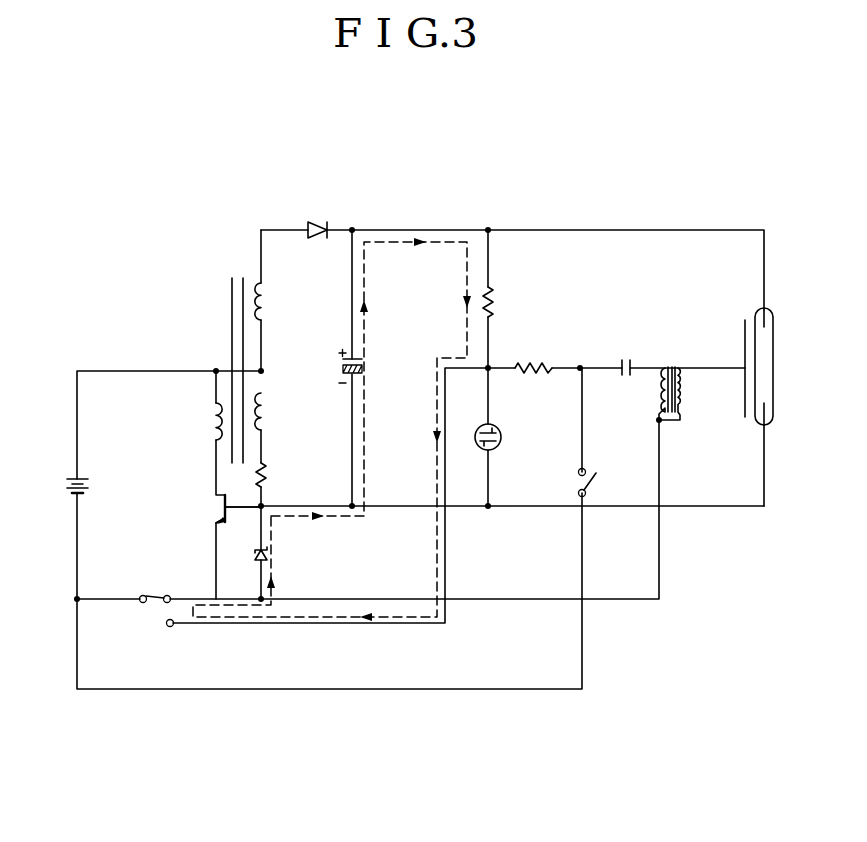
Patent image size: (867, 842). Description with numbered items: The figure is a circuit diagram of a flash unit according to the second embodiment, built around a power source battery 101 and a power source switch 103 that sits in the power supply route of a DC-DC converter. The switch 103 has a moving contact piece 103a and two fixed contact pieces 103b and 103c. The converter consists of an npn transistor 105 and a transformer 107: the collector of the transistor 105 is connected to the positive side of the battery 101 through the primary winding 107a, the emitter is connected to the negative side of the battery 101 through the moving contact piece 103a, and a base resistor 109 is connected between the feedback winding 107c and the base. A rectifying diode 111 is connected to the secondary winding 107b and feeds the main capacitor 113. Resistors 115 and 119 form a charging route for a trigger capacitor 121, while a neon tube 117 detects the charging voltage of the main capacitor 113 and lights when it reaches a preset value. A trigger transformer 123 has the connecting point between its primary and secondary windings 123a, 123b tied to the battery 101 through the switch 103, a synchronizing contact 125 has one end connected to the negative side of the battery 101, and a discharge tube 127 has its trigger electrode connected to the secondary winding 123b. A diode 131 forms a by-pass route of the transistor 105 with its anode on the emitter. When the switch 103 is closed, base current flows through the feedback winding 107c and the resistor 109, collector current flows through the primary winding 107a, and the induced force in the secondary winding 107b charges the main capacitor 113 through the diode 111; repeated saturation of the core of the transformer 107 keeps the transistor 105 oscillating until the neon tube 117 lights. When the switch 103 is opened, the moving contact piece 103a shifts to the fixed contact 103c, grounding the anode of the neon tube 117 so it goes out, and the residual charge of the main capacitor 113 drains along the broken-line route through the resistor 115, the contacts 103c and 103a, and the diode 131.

The power source battery 101 is at (78, 478).
The power source switch 103 is at (151, 608).
The moving contact piece 103a is at (157, 603).
The fixed contact piece 103b is at (142, 596).
The fixed contact piece 103c is at (172, 627).
The npn transistor 105 is at (221, 505).
The transformer 107 is at (236, 348).
The primary winding 107a is at (215, 412).
The secondary winding 107b is at (287, 299).
The feedback winding 107c is at (284, 404).
The base resistor 109 is at (265, 468).
The rectifying diode 111 is at (324, 224).
The main capacitor 113 is at (360, 360).
The resistor 115 is at (491, 293).
The neon tube 117 is at (498, 429).
The resistor 119 is at (541, 364).
The trigger capacitor 121 is at (620, 374).
The trigger transformer 123 is at (665, 386).
The primary winding 123a is at (663, 401).
The secondary winding 123b is at (683, 396).
The synchronizing contact 125 is at (588, 488).
The discharge tube 127 is at (764, 311).
The diode 131 is at (268, 556).